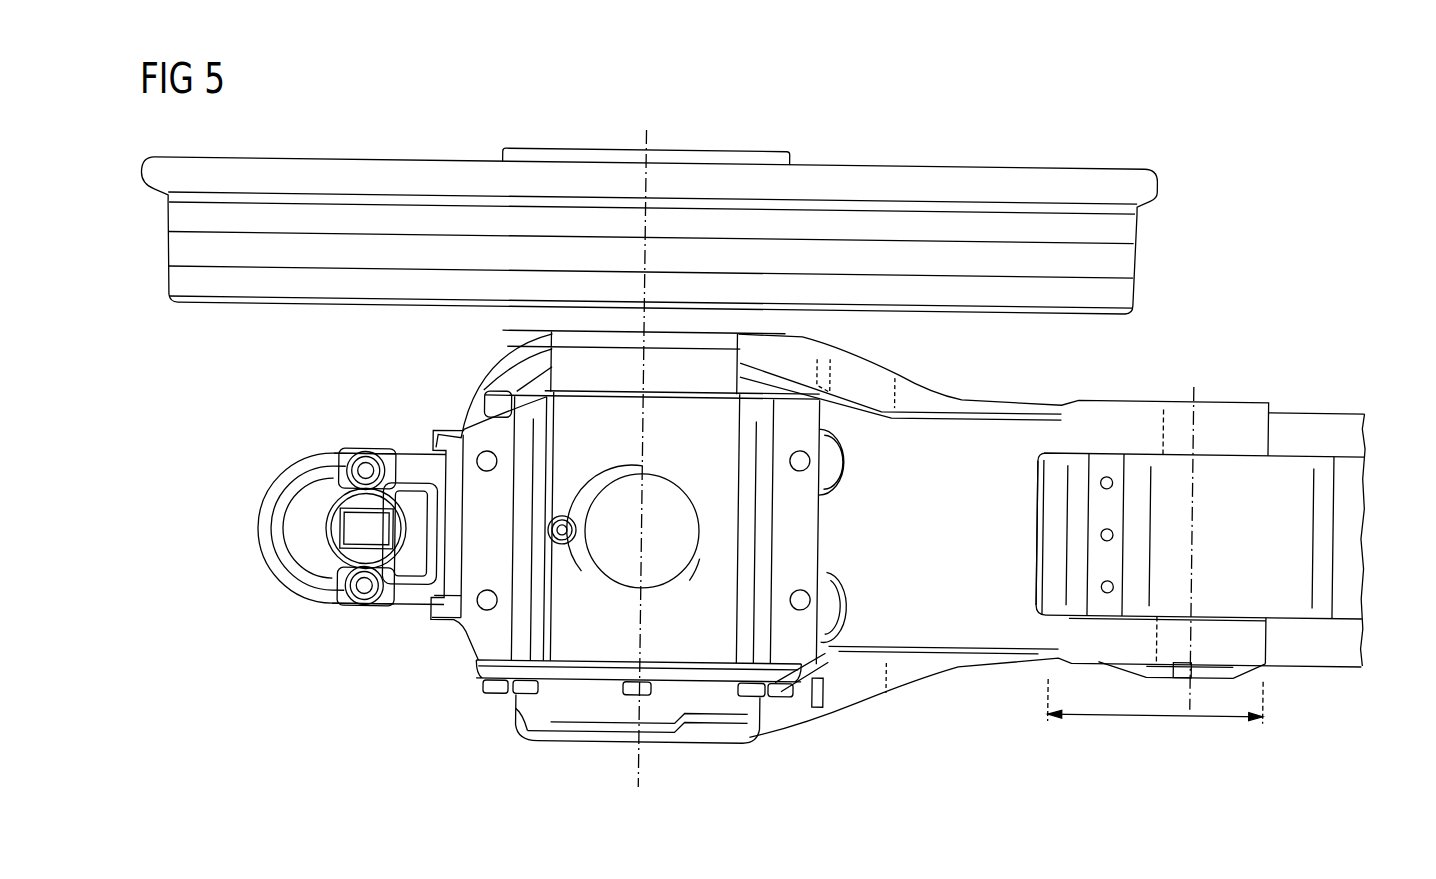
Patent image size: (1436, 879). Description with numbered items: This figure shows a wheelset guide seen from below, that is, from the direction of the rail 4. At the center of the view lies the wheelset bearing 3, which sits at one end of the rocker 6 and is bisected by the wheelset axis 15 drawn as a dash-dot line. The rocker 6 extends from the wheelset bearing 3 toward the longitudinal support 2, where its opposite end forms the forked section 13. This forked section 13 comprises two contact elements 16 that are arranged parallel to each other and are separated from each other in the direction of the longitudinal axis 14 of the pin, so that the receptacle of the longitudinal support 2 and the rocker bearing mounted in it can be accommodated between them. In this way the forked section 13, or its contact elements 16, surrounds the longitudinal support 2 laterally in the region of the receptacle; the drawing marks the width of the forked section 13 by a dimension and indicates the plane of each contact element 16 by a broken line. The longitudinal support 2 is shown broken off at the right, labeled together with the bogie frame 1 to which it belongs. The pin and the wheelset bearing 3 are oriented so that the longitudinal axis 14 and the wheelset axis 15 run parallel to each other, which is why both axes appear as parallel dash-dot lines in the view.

The bogie frame 1 is at (1279, 475).
The longitudinal support 2 is at (1037, 533).
The wheelset bearing 3 is at (586, 645).
The rail 4 is at (986, 181).
The rocker 6 is at (926, 620).
The forked section 13 is at (1160, 718).
The longitudinal axis of the pin 14 is at (1192, 688).
The wheelset axis 15 is at (645, 775).
The contact elements 16 is at (1227, 406).